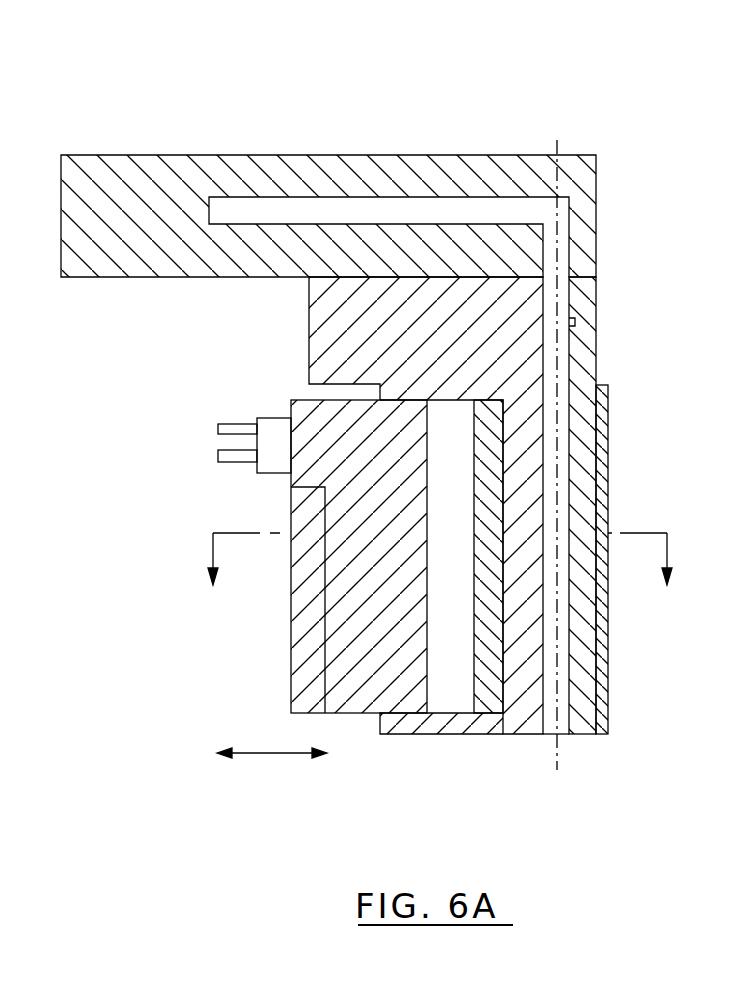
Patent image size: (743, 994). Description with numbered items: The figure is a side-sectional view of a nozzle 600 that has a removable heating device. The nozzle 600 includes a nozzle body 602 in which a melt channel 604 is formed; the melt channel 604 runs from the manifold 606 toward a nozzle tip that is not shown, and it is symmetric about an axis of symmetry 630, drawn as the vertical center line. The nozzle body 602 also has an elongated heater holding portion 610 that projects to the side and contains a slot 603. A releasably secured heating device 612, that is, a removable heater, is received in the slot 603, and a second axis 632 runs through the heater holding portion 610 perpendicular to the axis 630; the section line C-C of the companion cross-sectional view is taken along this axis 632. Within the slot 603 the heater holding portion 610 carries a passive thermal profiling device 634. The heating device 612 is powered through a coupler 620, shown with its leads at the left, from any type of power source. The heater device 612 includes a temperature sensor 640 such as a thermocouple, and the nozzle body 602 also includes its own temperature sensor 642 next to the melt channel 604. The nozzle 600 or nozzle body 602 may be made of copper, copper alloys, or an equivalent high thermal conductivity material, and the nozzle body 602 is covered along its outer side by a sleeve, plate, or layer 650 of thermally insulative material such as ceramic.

The nozzle 600 is at (500, 130).
The nozzle body 602 is at (583, 308).
The slot 603 is at (448, 703).
The melt channel 604 is at (563, 683).
The manifold 606 is at (308, 246).
The heater holding portion 610 is at (465, 720).
The heating device 612 is at (290, 692).
The coupler 620 is at (262, 418).
The axis of symmetry 630 is at (558, 764).
The axis 632 is at (222, 533).
The passive thermal profiling device 634 is at (500, 438).
The temperature sensor 640 is at (323, 614).
The temperature sensor 642 is at (574, 328).
The layer 650 is at (603, 490).